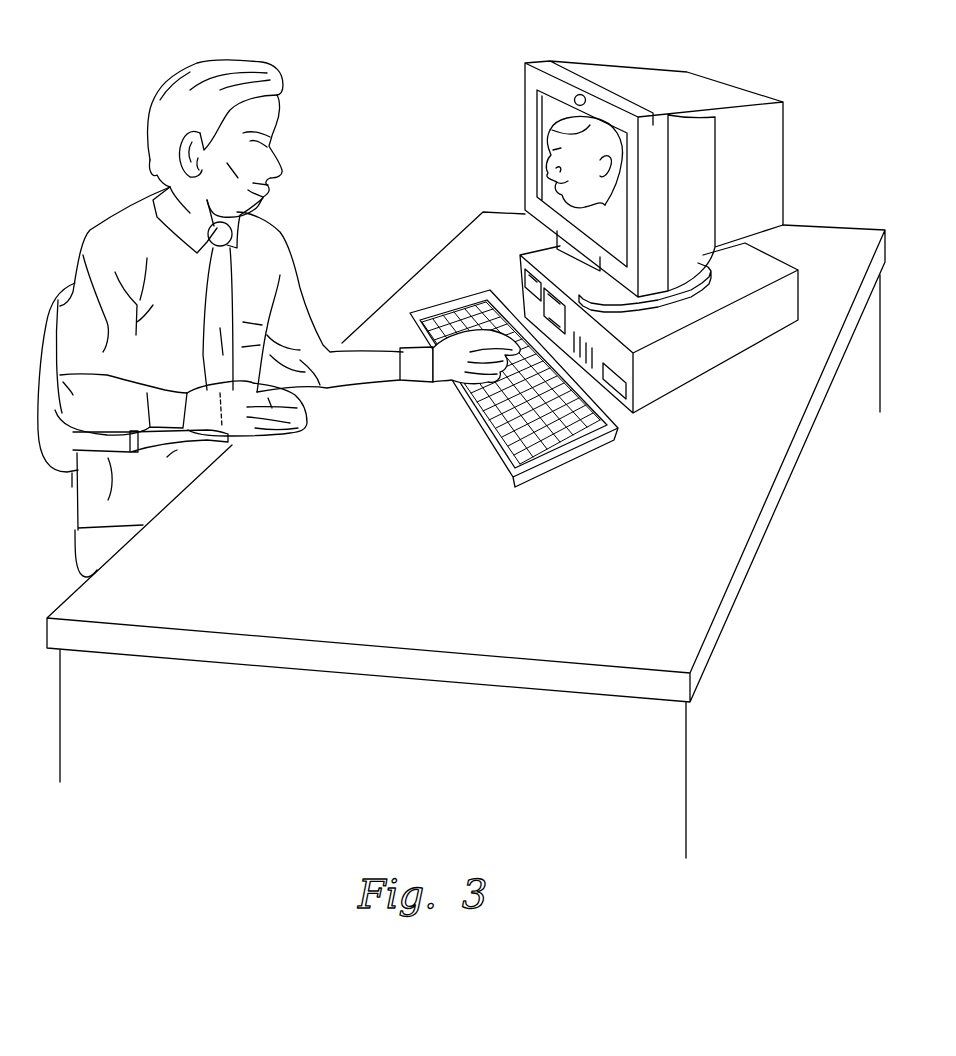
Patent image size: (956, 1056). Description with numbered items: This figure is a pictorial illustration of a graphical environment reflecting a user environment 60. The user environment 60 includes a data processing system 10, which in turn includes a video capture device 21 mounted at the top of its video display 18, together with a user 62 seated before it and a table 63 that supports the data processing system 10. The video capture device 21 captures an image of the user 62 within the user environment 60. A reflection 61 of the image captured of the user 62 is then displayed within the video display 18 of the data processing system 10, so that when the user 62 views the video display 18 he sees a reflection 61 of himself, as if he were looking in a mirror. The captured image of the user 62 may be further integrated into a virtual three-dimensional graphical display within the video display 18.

The data processing system 10 is at (791, 63).
The video display 18 is at (700, 71).
The video capture device 21 is at (581, 96).
The user environment 60 is at (253, 39).
The reflection 61 is at (552, 153).
The user 62 is at (279, 125).
The table 63 is at (720, 528).